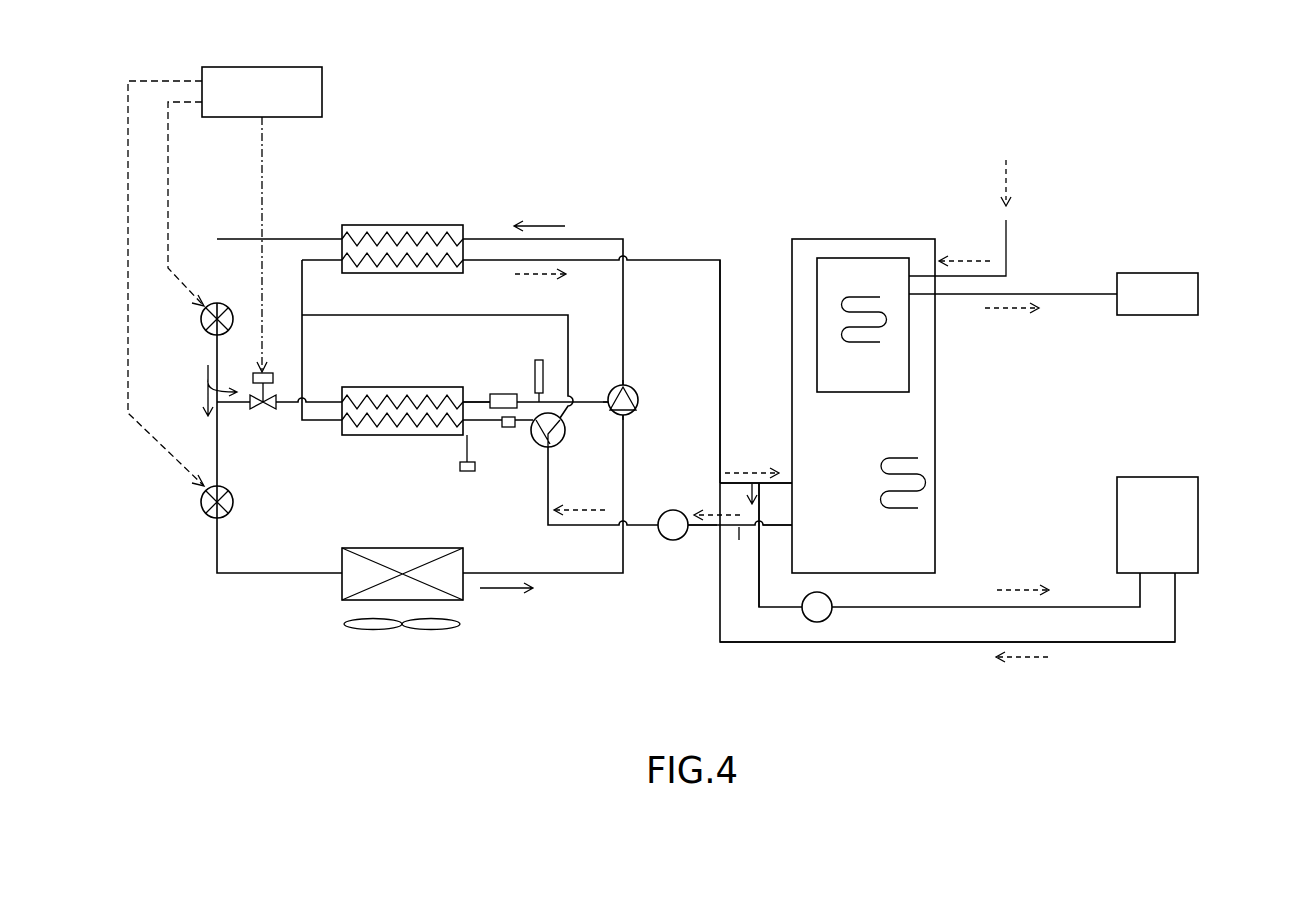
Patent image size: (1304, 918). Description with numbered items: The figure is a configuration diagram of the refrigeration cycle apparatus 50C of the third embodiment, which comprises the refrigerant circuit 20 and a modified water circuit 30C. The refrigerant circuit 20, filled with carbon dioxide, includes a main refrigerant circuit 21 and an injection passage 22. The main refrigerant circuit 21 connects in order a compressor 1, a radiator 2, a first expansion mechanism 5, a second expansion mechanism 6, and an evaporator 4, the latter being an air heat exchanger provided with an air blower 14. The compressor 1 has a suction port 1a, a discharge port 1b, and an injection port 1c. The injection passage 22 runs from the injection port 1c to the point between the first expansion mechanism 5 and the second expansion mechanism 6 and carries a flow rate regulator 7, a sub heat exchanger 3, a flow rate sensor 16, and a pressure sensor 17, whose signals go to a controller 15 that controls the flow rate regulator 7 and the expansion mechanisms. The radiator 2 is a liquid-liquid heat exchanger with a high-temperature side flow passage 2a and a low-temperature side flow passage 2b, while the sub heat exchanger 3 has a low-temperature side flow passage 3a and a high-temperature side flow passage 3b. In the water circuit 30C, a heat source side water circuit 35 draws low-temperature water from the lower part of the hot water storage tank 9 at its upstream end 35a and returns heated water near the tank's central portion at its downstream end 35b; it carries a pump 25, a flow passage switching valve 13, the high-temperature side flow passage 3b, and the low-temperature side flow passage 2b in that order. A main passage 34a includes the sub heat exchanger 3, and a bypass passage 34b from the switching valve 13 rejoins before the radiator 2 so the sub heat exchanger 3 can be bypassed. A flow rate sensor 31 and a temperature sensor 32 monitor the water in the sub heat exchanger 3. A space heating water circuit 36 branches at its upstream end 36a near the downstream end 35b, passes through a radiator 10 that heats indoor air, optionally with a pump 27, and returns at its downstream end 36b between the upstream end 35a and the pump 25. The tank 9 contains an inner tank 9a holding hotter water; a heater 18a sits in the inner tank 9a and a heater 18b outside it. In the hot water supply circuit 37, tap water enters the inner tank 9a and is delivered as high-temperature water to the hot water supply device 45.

The compressor 1 is at (634, 397).
The suction port 1a is at (630, 412).
The discharge port 1b is at (628, 388).
The injection port 1c is at (608, 394).
The radiator 2 is at (405, 232).
The high-temperature side flow passage 2a is at (423, 236).
The low-temperature side flow passage 2b is at (422, 268).
The sub heat exchanger 3 is at (402, 428).
The low-temperature side flow passage 3a is at (395, 396).
The high-temperature side flow passage 3b is at (422, 430).
The evaporator 4 is at (352, 548).
The first expansion mechanism 5 is at (203, 326).
The second expansion mechanism 6 is at (203, 510).
The flow rate regulator 7 is at (272, 373).
The hot water storage tank 9 is at (841, 383).
The inner tank 9a is at (873, 258).
The radiator 10 is at (1177, 477).
The flow passage switching valve 13 is at (562, 445).
The air blower 14 is at (448, 628).
The controller 15 is at (298, 67).
The flow rate sensor 16 is at (505, 394).
The pressure sensor 17 is at (539, 360).
The heater 18a is at (863, 343).
The heater 18b is at (902, 458).
The refrigerant circuit 20 is at (582, 587).
The main refrigerant circuit 21 is at (588, 238).
The injection passage 22 is at (483, 400).
The pump 25 is at (668, 540).
The pump 27 is at (833, 603).
The water circuit 30C is at (845, 154).
The flow rate sensor 31 is at (508, 428).
The temperature sensor 32 is at (470, 471).
The main passage 34a is at (310, 425).
The bypass passage 34b is at (372, 314).
The heat source side water circuit 35 is at (660, 248).
The upstream end 35a is at (793, 525).
The downstream end 35b is at (793, 483).
The space heating water circuit 36 is at (802, 653).
The upstream end 36a is at (762, 486).
The downstream end 36b is at (717, 530).
The hot water supply circuit 37 is at (1017, 253).
The hot water supply device 45 is at (1198, 293).
The refrigeration cycle apparatus 50C is at (512, 152).